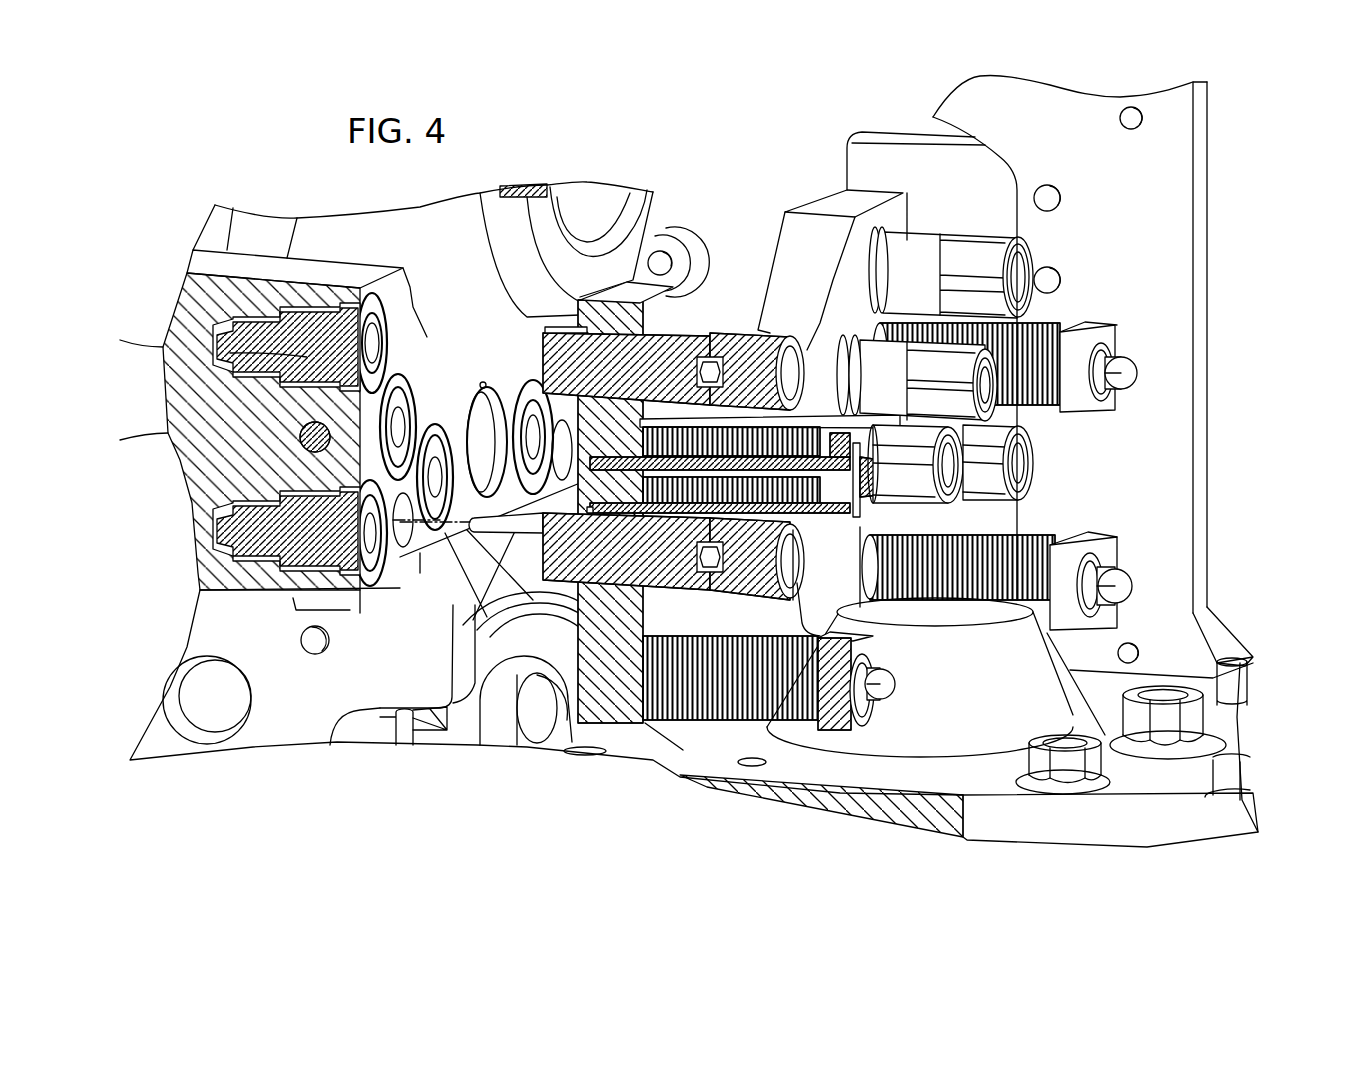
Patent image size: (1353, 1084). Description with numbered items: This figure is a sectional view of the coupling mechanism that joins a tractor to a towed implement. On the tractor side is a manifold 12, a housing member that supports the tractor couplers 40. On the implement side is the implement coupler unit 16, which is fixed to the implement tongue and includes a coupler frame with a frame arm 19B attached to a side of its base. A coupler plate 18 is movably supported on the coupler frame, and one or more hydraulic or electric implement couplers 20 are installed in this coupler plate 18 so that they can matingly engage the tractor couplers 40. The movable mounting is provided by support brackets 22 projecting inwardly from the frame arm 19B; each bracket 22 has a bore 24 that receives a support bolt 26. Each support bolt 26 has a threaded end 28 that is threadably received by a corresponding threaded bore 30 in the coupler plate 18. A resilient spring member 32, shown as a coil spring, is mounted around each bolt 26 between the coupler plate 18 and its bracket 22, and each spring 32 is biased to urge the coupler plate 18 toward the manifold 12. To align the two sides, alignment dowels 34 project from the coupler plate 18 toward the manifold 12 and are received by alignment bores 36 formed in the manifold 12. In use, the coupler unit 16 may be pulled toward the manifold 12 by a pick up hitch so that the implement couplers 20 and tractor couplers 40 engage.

The manifold 12 is at (260, 437).
The implement coupler unit 16 is at (1228, 100).
The coupler plate 18 is at (612, 668).
The frame arm 19B is at (1207, 172).
The implement coupler 20 is at (937, 360).
The support bracket 22 is at (1087, 330).
The bore 24 is at (837, 423).
The support bolt 26 is at (1137, 375).
The threaded end 28 is at (626, 366).
The threaded bore 30 is at (626, 536).
The resilient spring member 32 is at (1110, 270).
The alignment dowel 34 is at (508, 530).
The alignment bore 36 is at (510, 413).
The tractor coupler 40 is at (215, 337).